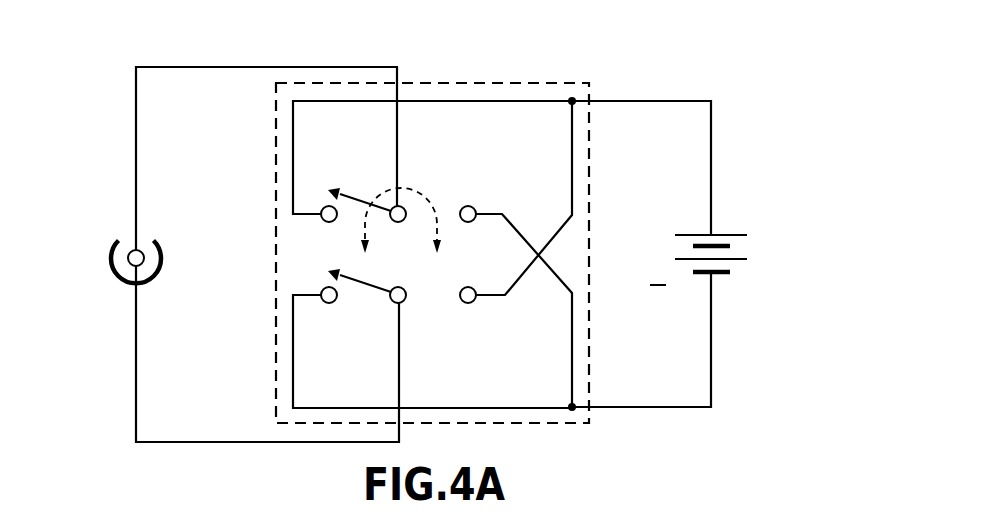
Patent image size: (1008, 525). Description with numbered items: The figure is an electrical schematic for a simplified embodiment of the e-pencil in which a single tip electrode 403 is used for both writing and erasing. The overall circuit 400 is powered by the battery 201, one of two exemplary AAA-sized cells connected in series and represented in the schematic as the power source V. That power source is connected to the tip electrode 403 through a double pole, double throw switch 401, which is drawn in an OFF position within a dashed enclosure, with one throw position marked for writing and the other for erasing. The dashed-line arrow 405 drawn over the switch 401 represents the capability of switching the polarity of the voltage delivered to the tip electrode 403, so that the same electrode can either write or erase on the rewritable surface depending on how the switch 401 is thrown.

The recording/reproducing circuit 400 is at (86, 87).
The double pole, double throw switch 401 is at (528, 83).
The tip electrode 403 is at (104, 250).
The dashed-line arrow 405 is at (427, 192).
The battery 201 is at (748, 247).